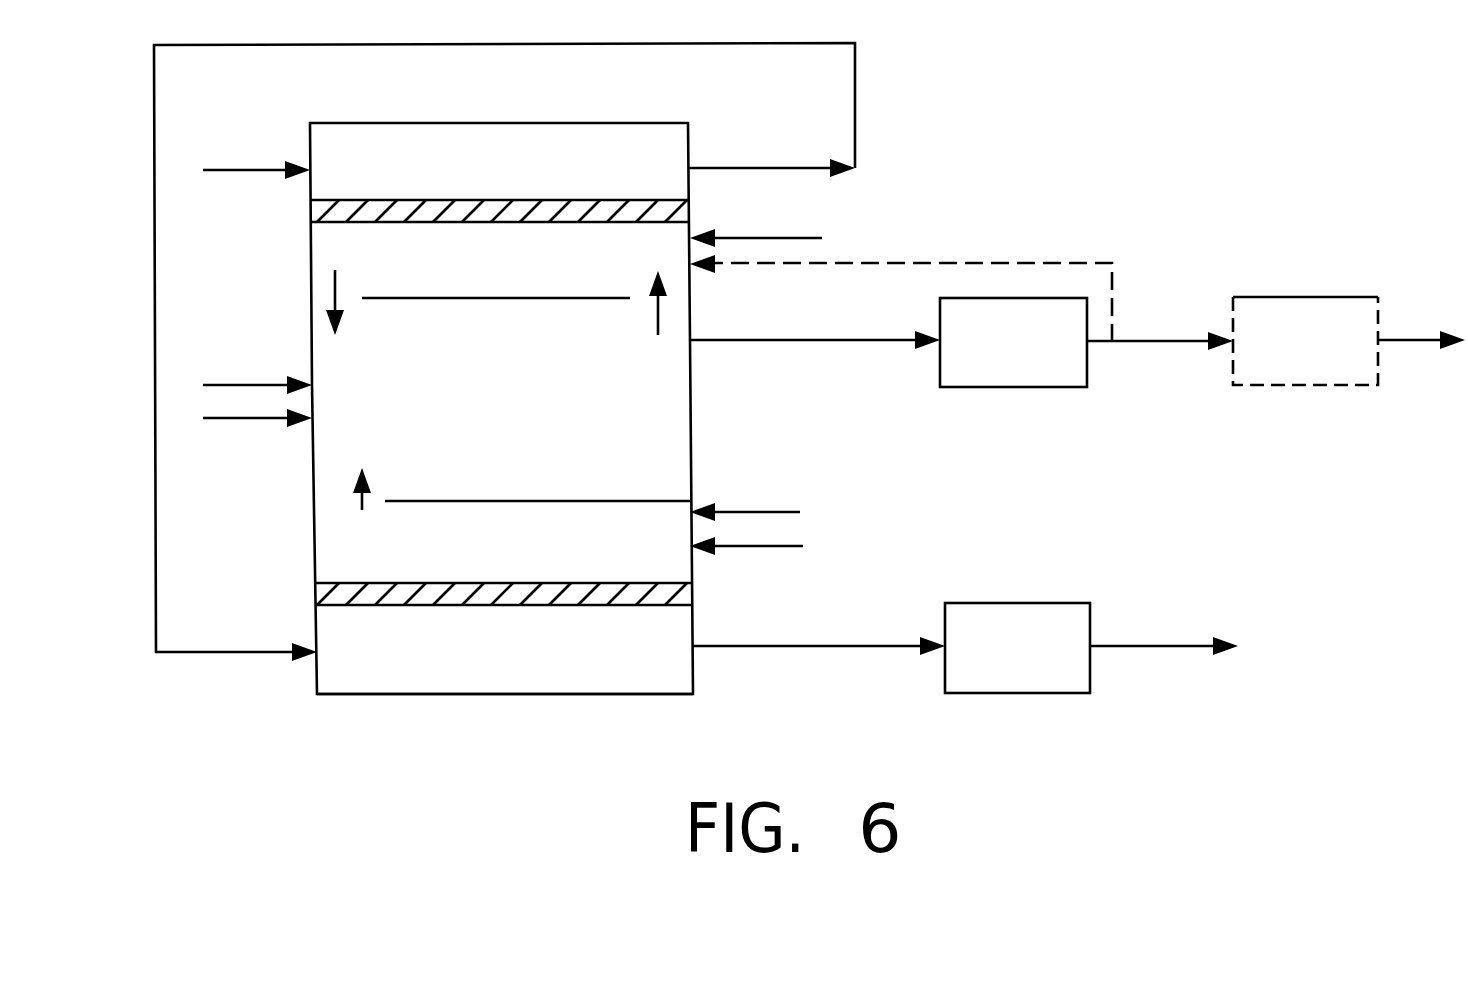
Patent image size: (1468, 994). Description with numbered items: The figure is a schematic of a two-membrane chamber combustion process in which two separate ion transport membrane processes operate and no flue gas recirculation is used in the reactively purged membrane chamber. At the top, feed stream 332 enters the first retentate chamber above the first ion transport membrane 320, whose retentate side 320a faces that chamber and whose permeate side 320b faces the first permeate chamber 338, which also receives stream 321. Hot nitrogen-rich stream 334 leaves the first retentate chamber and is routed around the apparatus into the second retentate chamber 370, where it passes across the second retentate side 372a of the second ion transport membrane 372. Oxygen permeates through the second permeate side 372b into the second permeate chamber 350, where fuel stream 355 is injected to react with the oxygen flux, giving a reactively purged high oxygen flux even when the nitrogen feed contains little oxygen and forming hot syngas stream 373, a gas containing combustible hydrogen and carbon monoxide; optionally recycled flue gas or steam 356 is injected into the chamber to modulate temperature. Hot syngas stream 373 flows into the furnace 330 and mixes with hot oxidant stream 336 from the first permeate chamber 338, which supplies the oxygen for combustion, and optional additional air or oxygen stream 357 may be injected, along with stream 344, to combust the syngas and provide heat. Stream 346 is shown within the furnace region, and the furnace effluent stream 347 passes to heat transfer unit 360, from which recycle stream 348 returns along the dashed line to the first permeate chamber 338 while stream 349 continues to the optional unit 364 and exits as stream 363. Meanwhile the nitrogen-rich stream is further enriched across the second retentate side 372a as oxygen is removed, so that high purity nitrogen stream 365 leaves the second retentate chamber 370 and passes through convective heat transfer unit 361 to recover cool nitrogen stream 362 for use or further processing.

The ion transport membrane 320 is at (315, 210).
The retentate side of ion transport membrane 320a is at (560, 199).
The permeate side of ion transport membrane 320b is at (498, 225).
The stream 321 is at (745, 238).
The furnace 330 is at (480, 375).
The feed stream 332 is at (255, 165).
The hot nitrogen-rich stream 334 is at (777, 167).
The hot oxidant stream 336 is at (337, 297).
The first permeate chamber 338 is at (480, 280).
The stream 344 is at (233, 383).
The stream 346 is at (657, 308).
The stream 347 is at (828, 342).
The recycle stream 348 is at (920, 262).
The stream 349 is at (1147, 338).
The second permeate chamber 350 is at (477, 553).
The fuel stream 355 is at (750, 508).
The recycled flue gas or steam 356 is at (782, 543).
The additional air or oxygen stream 357 is at (250, 420).
The heat transfer unit 360 is at (998, 357).
The convective heat transfer unit 361 is at (1000, 663).
The cool nitrogen stream 362 is at (1150, 643).
The stream 363 is at (1402, 337).
The optional unit 364 is at (1282, 357).
The high purity nitrogen stream 365 is at (835, 647).
The second retentate chamber 370 is at (477, 667).
The ion transport membrane 372 is at (693, 596).
The second retentate side 372a is at (510, 607).
The second permeate side 372b is at (503, 583).
The hot syngas stream 373 is at (365, 505).